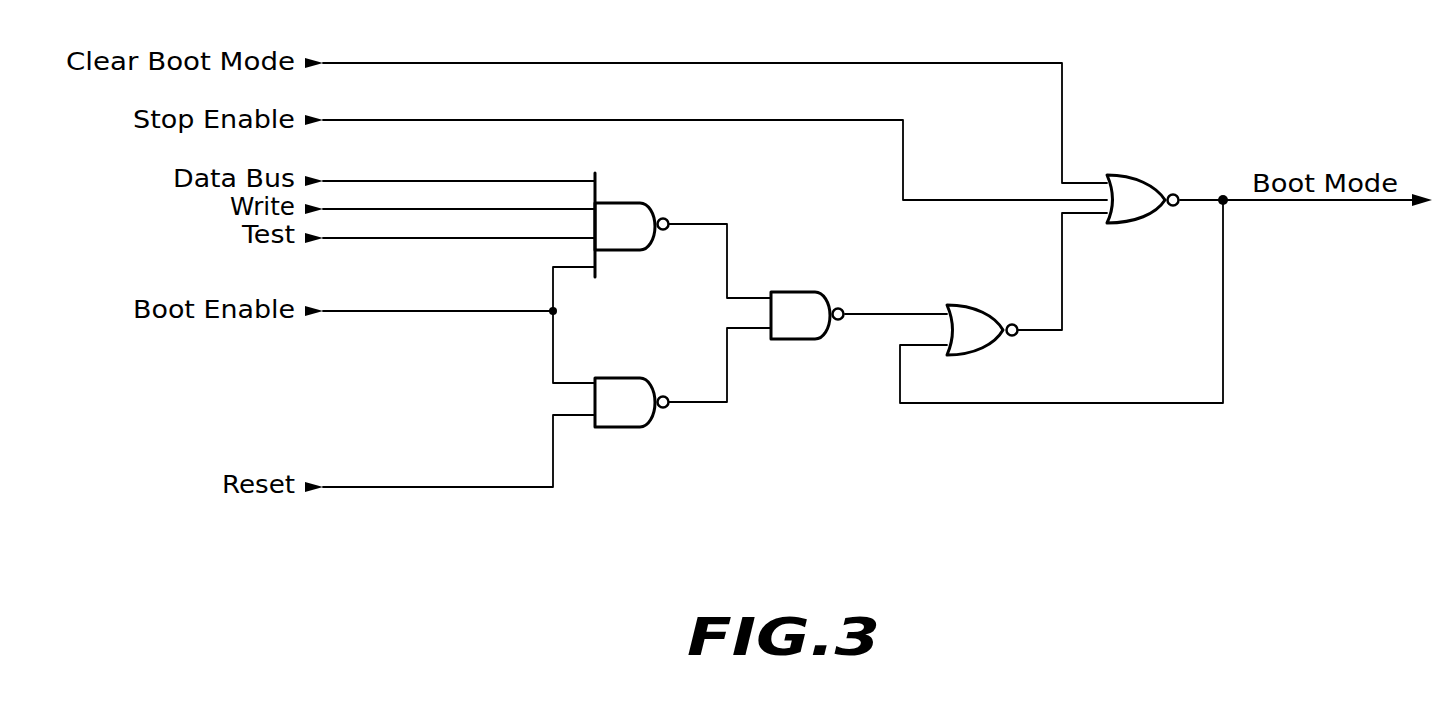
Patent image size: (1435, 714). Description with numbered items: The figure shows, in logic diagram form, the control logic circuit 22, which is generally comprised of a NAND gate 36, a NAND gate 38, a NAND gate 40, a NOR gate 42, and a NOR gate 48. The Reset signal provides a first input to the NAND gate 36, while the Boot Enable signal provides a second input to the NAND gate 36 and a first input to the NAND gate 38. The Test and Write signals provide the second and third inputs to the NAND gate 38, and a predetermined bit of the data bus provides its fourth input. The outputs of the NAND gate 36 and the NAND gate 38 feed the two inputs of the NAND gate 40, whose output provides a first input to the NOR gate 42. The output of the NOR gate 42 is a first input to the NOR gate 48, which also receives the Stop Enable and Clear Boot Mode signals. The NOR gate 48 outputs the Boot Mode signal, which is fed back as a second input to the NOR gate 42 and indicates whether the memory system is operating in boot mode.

The control logic circuit 22 is at (868, 300).
The NAND gate 36 is at (617, 378).
The NAND gate 38 is at (617, 203).
The NAND gate 40 is at (788, 292).
The NOR gate 42 is at (968, 305).
The NOR gate 48 is at (1155, 221).